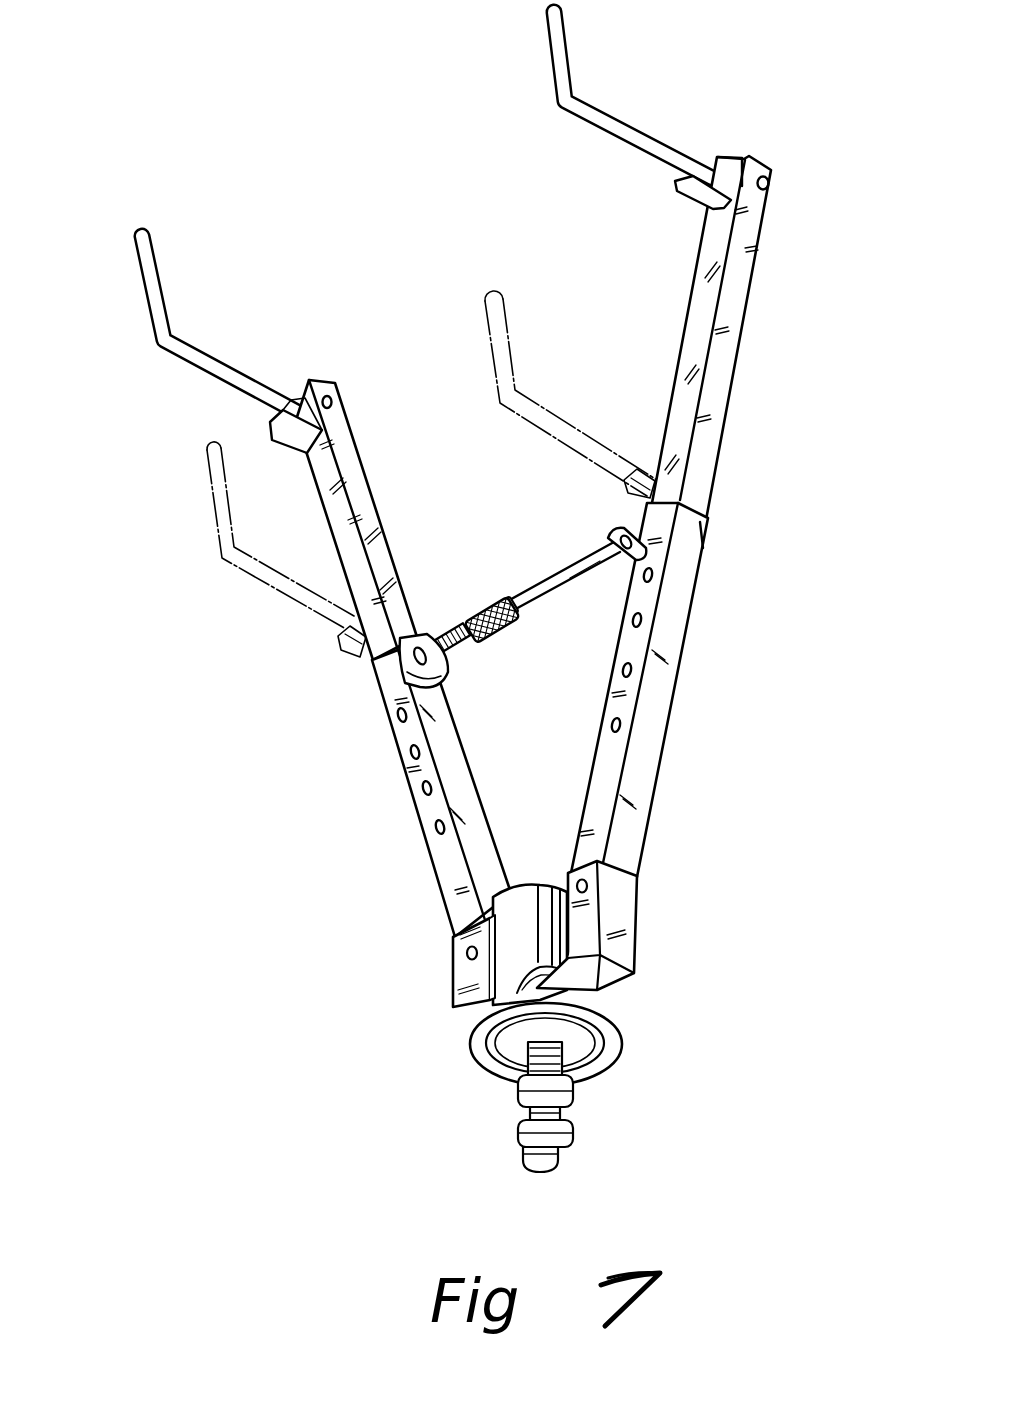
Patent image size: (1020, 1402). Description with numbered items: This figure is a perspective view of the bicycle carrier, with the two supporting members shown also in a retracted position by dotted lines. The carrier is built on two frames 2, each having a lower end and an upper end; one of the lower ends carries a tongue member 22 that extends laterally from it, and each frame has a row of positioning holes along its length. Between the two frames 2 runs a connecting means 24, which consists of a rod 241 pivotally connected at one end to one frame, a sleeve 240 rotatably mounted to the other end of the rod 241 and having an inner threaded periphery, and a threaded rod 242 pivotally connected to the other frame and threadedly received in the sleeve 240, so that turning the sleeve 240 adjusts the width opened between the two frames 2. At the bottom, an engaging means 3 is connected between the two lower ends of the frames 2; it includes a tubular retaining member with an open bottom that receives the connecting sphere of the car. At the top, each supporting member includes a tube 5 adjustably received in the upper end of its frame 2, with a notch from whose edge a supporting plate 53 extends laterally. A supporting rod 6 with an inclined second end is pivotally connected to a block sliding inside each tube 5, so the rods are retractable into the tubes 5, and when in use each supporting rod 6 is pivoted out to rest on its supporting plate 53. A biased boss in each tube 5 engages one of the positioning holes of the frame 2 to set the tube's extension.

The frame 2 is at (665, 720).
The engaging means 3 is at (523, 1016).
The tube 5 is at (735, 313).
The supporting rod 6 is at (606, 112).
The tongue member 22 is at (582, 993).
The connecting means 24 is at (523, 624).
The supporting plate 53 is at (293, 433).
The sleeve 240 is at (510, 640).
The rod 241 is at (573, 586).
The threaded rod 242 is at (463, 655).